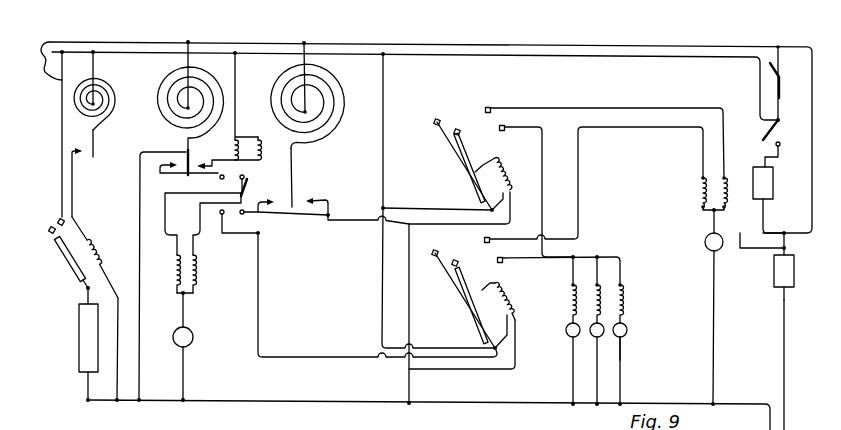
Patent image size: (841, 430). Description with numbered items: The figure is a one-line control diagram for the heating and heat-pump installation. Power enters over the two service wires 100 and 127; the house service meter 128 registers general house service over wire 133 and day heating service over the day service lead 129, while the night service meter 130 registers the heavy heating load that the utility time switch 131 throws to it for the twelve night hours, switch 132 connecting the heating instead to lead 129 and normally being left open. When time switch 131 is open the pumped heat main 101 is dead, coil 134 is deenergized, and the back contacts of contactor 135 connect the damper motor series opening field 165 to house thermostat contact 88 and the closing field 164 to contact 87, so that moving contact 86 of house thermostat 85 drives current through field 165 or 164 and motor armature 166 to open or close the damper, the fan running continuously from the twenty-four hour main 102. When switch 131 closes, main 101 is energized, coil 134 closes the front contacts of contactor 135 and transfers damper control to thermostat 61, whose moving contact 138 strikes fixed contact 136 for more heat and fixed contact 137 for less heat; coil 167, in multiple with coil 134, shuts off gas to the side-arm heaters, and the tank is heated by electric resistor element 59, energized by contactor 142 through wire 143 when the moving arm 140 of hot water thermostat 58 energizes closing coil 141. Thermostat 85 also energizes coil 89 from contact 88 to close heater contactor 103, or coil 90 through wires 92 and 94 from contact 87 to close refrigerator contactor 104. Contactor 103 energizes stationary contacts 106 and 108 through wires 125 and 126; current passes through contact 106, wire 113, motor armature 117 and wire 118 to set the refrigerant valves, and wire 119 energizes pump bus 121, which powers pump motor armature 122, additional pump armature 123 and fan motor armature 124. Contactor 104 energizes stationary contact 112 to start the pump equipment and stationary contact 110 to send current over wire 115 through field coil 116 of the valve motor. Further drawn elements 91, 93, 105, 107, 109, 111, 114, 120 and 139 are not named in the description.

The hot water thermostat 58 is at (107, 90).
The electric resistor element 59 is at (79, 337).
The thermostat 61 is at (168, 85).
The house thermostat 85 is at (340, 95).
The moving contact 86 is at (294, 182).
The stationary contact 87 is at (261, 196).
The stationary contact 88 is at (318, 197).
The coil 89 is at (506, 172).
The coil 90 is at (514, 298).
The conductor 91 is at (345, 226).
The wire 92 is at (260, 308).
The conductor 93 is at (411, 310).
The wire 94 is at (450, 371).
The power service wire 100 is at (531, 402).
The pumped heat main 101 is at (490, 43).
The twenty-four hour service main 102 is at (561, 53).
The heater contactor 103 is at (470, 190).
The refrigerator contactor 104 is at (468, 318).
The switch blade tip 105 is at (440, 119).
The stationary contact 106 is at (490, 106).
The switch blade tip 107 is at (458, 128).
The stationary contact 108 is at (500, 131).
The switch blade tip 109 is at (435, 250).
The stationary contact 110 is at (485, 245).
The switch blade tip 111 is at (458, 262).
The stationary contact 112 is at (503, 257).
The wire 113 is at (645, 108).
The relay coil 114 is at (729, 180).
The wire 115 is at (642, 128).
The field coil 116 is at (698, 196).
The motor armature 117 is at (705, 242).
The wire 118 is at (712, 297).
The wire 119 is at (545, 142).
The conductor 120 is at (508, 259).
The pump bus 121 is at (597, 256).
The pump motor armature 122 is at (565, 330).
The motor armature 123 is at (622, 340).
The fan motor armature 124 is at (628, 330).
The wire 125 is at (385, 116).
The wire 126 is at (385, 205).
The power service wire 127 is at (783, 350).
The house service meter 128 is at (774, 277).
The day service lead 129 is at (781, 152).
The night service meter 130 is at (774, 184).
The time switch 131 is at (782, 126).
The switch 132 is at (782, 71).
The wire 133 is at (741, 232).
The coil 134 is at (240, 138).
The contactor 135 is at (245, 187).
The fixed contact 136 is at (214, 157).
The fixed contact 137 is at (182, 179).
The moving contact 138 is at (186, 142).
The movable contact 139 is at (75, 191).
The moving arm 140 is at (95, 153).
The closing coil 141 is at (98, 252).
The contactor 142 is at (69, 262).
The wire 143 is at (62, 48).
The damper motor closing field 164 is at (172, 262).
The damper motor series opening field 165 is at (198, 272).
The motor armature 166 is at (193, 332).
The relay coil 167 is at (262, 153).